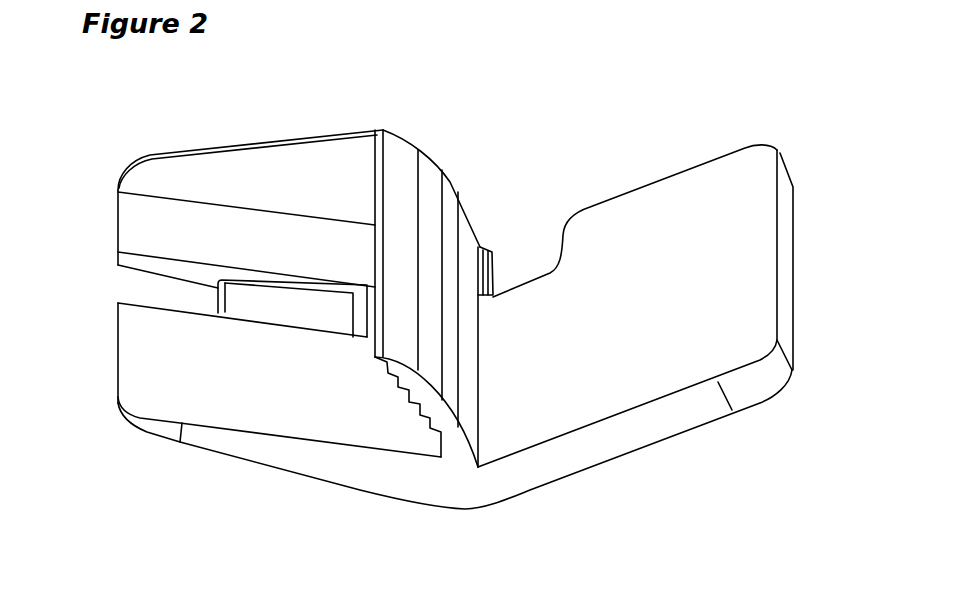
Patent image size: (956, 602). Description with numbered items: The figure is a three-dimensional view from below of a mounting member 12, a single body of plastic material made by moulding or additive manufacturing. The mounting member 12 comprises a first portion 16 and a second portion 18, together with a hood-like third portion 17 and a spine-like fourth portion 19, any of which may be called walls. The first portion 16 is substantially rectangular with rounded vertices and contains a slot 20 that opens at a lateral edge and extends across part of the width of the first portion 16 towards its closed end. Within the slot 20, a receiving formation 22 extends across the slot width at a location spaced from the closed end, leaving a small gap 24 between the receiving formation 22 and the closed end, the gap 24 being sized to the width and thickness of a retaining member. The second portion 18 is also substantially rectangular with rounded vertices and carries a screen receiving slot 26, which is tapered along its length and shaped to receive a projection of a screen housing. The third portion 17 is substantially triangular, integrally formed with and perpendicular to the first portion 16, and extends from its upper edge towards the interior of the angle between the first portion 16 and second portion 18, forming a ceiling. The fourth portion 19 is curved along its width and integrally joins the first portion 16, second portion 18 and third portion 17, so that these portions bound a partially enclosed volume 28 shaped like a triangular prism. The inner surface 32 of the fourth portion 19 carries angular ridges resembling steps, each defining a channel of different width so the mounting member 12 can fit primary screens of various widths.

The mounting member 12 is at (465, 78).
The first portion 16 is at (230, 393).
The third portion 17 is at (273, 173).
The second portion 18 is at (637, 377).
The fourth portion 19 is at (463, 440).
The slot 20 is at (133, 288).
The receiving formation 22 is at (253, 303).
The gap 24 is at (368, 313).
The screen receiving slot 26 is at (523, 263).
The partially enclosed volume 28 is at (377, 383).
The inner surface 32 is at (403, 405).